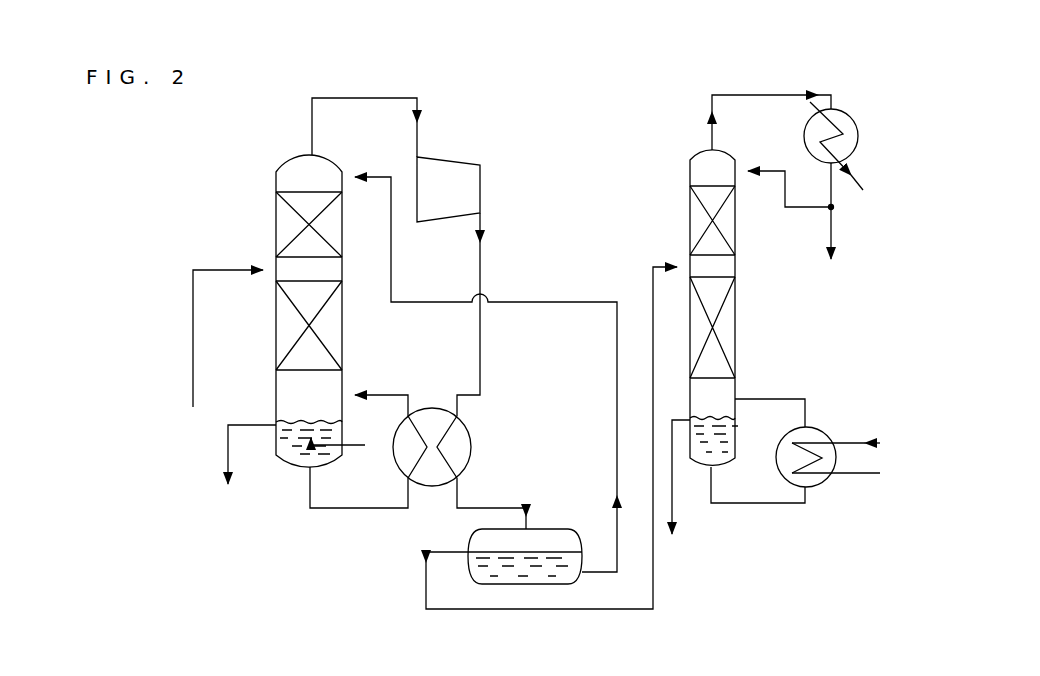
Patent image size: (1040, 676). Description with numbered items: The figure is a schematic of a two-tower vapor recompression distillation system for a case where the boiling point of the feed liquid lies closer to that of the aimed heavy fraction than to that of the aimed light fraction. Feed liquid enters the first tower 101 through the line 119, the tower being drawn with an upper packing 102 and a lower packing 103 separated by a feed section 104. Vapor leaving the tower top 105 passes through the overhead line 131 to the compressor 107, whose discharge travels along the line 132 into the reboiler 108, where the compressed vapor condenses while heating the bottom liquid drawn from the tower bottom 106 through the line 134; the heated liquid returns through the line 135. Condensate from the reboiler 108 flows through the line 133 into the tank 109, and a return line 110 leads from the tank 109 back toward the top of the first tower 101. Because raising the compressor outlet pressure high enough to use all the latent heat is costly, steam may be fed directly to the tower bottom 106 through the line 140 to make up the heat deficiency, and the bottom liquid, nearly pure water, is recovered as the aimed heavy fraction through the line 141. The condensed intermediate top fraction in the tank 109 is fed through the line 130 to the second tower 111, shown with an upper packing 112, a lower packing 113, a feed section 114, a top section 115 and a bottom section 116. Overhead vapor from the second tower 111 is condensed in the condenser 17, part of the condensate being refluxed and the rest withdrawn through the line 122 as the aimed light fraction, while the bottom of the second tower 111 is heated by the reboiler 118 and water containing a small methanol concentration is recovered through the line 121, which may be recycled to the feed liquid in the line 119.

The first tower 101 is at (262, 172).
The upper packing 102 is at (287, 222).
The lower packing 103 is at (290, 328).
The feed section 104 is at (288, 272).
The tower top 105 is at (298, 165).
The tower bottom 106 is at (290, 400).
The compressor 107 is at (468, 165).
The reboiler 108 is at (472, 430).
The tank 109 is at (555, 528).
The return line 110 is at (552, 304).
The second tower 111 is at (676, 213).
The upper packing 112 is at (737, 232).
The lower packing 113 is at (737, 320).
The feed section 114 is at (738, 265).
The top section 115 is at (702, 168).
The bottom section 116 is at (712, 408).
The condenser 17 is at (860, 135).
The reboiler 118 is at (830, 430).
The feed liquid line 119 is at (177, 380).
The line 121 is at (674, 525).
The line 122 is at (832, 243).
The line 130 is at (518, 612).
The overhead vapor line 131 is at (370, 95).
The compressed vapor line 132 is at (482, 287).
The condensate line 133 is at (497, 505).
The bottoms circulation line 134 is at (348, 510).
The vapor return line 135 is at (383, 393).
The line 140 is at (350, 440).
The line 141 is at (230, 455).